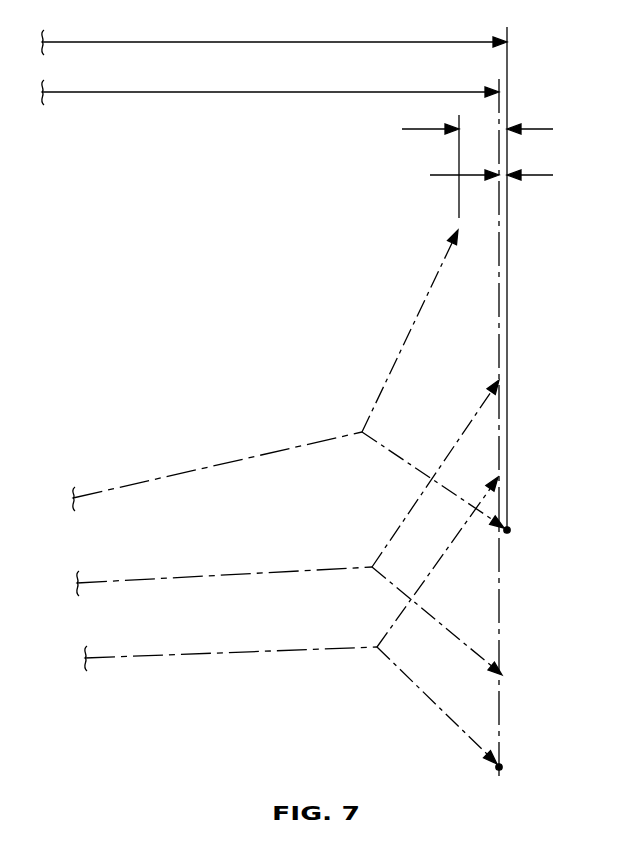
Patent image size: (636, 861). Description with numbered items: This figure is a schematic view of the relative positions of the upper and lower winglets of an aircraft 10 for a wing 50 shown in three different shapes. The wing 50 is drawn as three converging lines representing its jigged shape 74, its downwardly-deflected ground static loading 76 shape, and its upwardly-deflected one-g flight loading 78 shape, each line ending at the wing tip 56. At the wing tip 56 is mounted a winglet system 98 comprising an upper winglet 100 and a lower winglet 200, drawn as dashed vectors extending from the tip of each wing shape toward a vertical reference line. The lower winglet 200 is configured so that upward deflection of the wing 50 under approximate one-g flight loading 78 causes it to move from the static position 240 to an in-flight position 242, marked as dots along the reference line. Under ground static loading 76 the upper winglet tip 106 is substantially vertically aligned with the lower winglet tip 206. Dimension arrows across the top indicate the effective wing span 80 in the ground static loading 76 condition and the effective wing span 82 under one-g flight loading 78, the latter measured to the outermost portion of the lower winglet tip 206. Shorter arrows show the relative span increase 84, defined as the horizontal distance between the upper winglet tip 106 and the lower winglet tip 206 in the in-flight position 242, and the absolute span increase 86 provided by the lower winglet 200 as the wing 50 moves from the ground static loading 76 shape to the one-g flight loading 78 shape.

The aircraft 10 is at (96, 492).
The wing 50 is at (108, 581).
The wing tip 56 is at (366, 566).
The jigged shape 74 is at (256, 573).
The ground static loading shape 76 is at (245, 653).
The 1-g flight loading shape 78 is at (200, 468).
The effective wing span 80 is at (265, 92).
The effective wing span 82 is at (265, 42).
The relative span increase 84 is at (540, 129).
The absolute span increase 86 is at (540, 175).
The winglet system 98 is at (425, 297).
The upper winglet 100 is at (413, 326).
The upper winglet tip 106 is at (460, 231).
The lower winglet 200 is at (405, 460).
The lower winglet tip 206 is at (501, 522).
The static position 240 is at (500, 766).
The in-flight position 242 is at (508, 531).